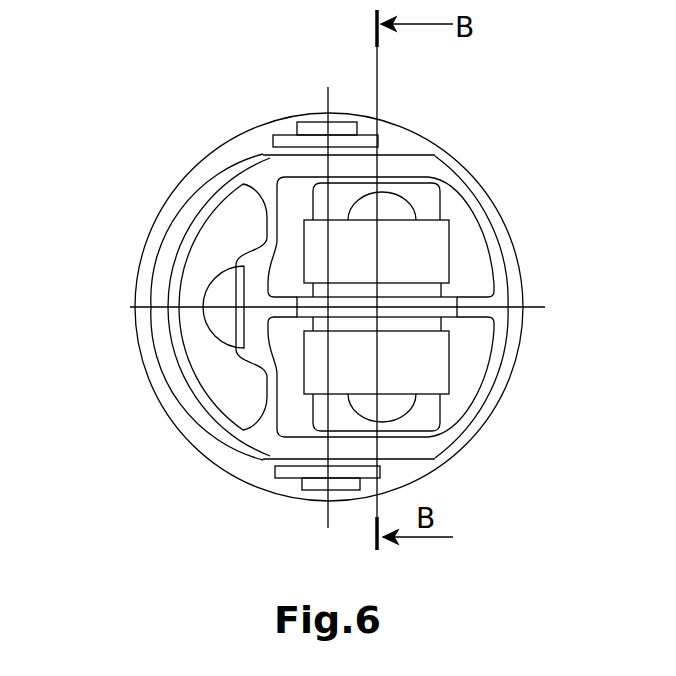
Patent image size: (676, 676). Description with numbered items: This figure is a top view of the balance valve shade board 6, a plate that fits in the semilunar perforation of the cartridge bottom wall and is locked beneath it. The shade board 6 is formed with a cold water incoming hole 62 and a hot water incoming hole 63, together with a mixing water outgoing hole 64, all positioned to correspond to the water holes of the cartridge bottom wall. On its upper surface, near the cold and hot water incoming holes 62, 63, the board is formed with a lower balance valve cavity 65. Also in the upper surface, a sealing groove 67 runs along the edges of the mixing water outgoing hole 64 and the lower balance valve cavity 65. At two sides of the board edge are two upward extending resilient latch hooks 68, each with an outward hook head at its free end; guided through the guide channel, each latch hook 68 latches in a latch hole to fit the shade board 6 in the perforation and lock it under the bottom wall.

The balance valve shade board 6 is at (106, 284).
The cold water incoming hole 62 is at (395, 412).
The hot water incoming hole 63 is at (390, 212).
The mixing water outgoing hole 64 is at (204, 318).
The lower balance valve cavity 65 is at (408, 270).
The sealing groove 67 is at (277, 168).
The resilient latch hook 68 is at (363, 140).